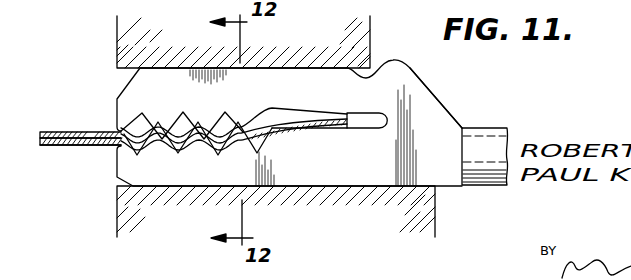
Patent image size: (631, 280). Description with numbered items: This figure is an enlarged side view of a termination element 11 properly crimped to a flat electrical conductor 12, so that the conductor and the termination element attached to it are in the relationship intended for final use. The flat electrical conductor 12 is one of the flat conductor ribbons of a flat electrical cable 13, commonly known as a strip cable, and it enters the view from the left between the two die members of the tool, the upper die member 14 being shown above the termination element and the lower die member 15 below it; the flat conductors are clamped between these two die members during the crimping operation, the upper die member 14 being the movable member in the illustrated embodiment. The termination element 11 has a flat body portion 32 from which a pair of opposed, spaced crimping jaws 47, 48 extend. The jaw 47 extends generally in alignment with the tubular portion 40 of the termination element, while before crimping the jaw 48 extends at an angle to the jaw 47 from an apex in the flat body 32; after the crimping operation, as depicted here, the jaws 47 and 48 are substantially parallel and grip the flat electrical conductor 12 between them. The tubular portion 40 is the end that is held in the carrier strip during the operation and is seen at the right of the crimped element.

The termination element 11 is at (114, 79).
The flat electrical conductor 12 is at (51, 131).
The flat electrical cable 13 is at (60, 150).
The upper die member 14 is at (117, 26).
The die member 15 is at (118, 218).
The flat body portion 32 is at (436, 104).
The tubular portion 40 is at (487, 134).
The crimping jaw 47 is at (128, 170).
The crimping jaw 48 is at (133, 103).